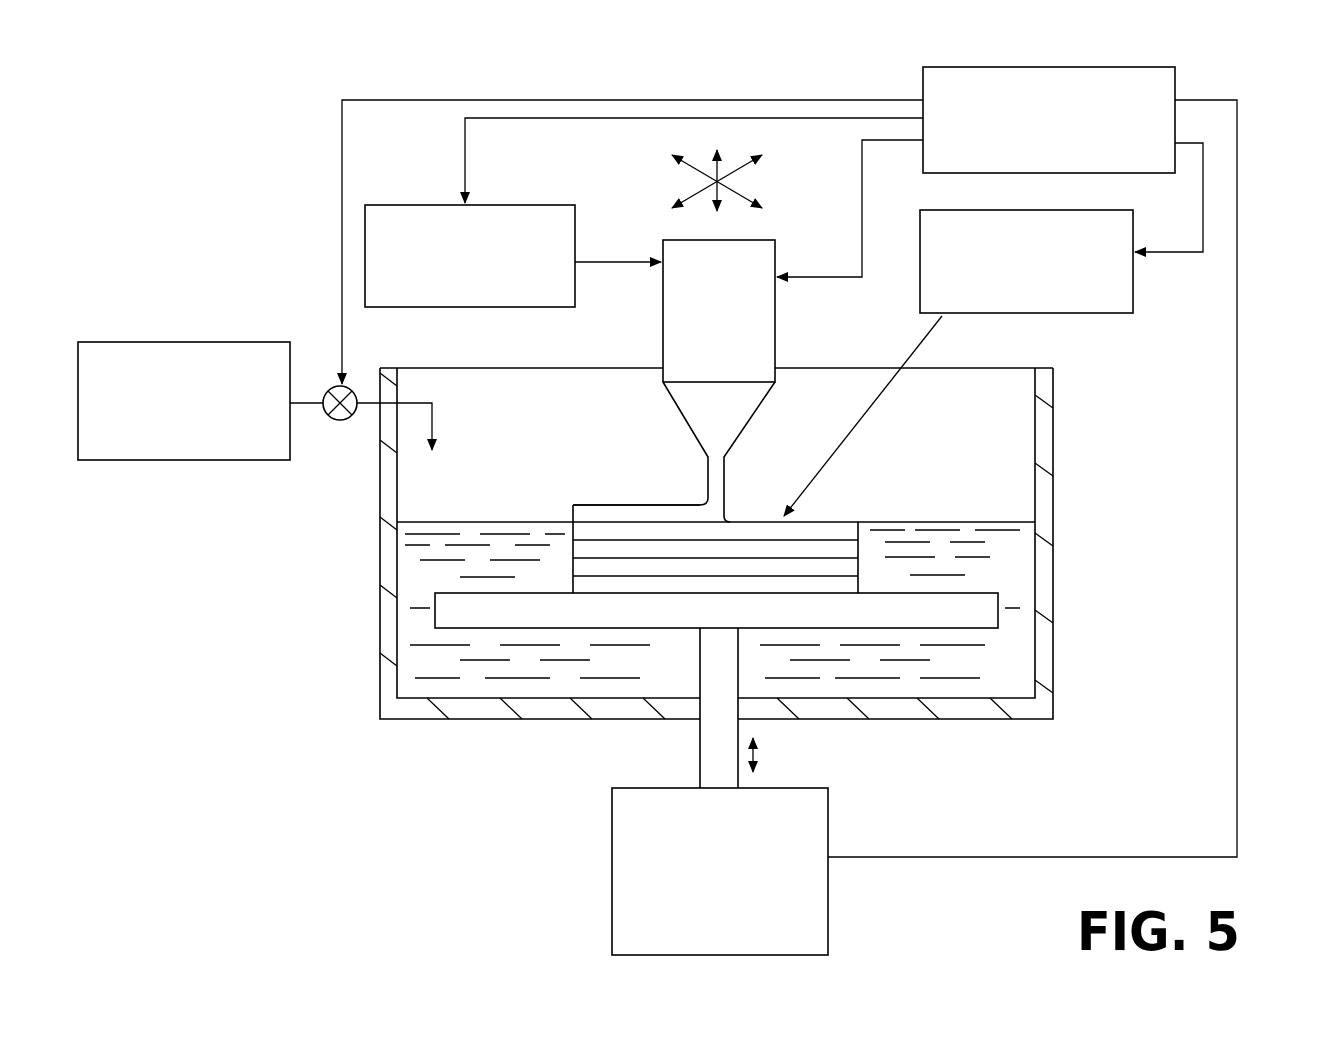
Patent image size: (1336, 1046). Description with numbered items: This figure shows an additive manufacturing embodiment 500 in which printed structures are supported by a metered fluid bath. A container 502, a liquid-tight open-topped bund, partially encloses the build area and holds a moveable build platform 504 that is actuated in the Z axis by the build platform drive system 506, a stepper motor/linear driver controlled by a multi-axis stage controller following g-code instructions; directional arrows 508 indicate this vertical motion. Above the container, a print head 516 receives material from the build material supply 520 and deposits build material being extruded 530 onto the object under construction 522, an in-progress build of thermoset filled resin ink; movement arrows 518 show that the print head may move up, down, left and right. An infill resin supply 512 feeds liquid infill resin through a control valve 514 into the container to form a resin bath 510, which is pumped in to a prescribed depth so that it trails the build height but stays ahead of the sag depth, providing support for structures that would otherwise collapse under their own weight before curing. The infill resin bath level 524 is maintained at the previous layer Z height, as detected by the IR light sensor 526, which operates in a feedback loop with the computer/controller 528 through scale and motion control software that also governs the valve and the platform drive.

The embodiment of the apparatus, systems, and methods 500 is at (1203, 82).
The container 502 is at (1053, 460).
The build platform 504 is at (975, 612).
The build platform drive system 506 is at (612, 860).
The directional arrows 508 is at (760, 758).
The resin bath 510 is at (418, 583).
The infill resin supply 512 is at (165, 342).
The control valve 514 is at (337, 437).
The print head 516 is at (663, 332).
The movement arrows 518 is at (768, 193).
The build material supply 520 is at (496, 198).
The object under construction 522 is at (827, 523).
The infill resin bath level 524 is at (450, 523).
The IR light sensor 526 is at (1093, 313).
The computer/controller 528 is at (923, 80).
The build material being extruded 530 is at (628, 505).